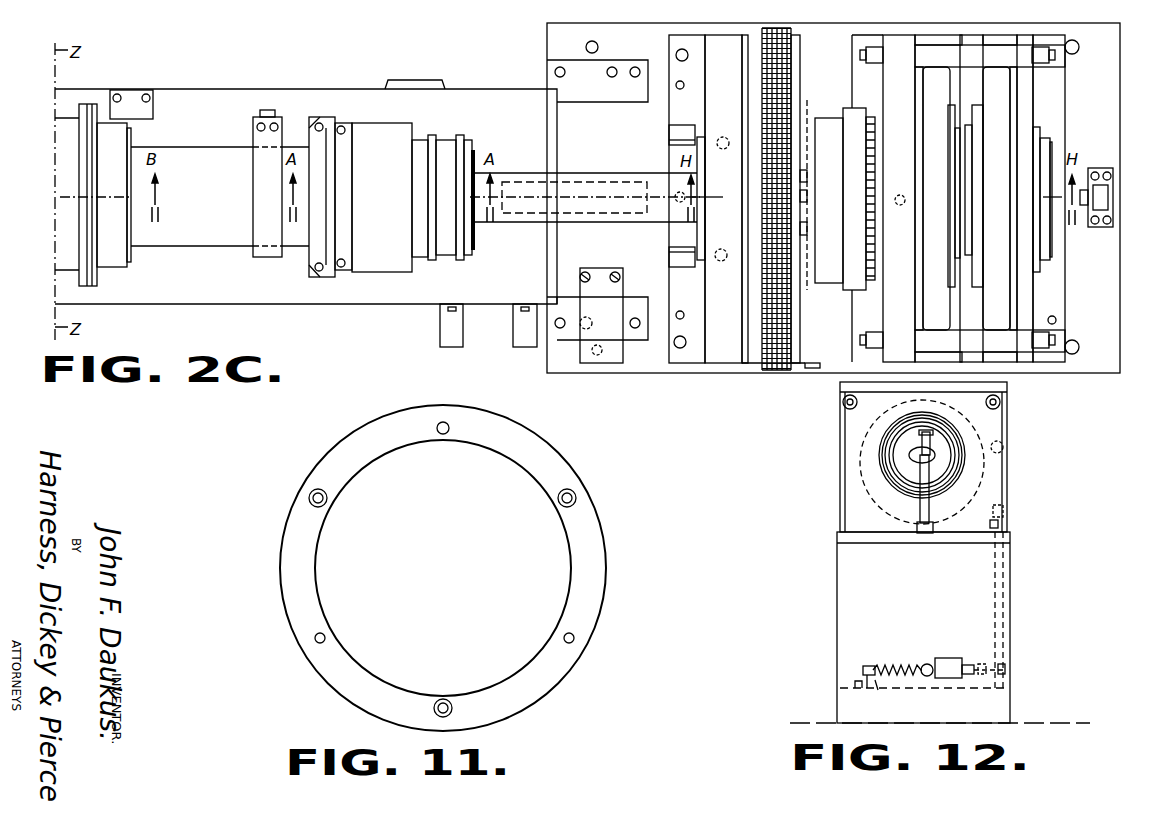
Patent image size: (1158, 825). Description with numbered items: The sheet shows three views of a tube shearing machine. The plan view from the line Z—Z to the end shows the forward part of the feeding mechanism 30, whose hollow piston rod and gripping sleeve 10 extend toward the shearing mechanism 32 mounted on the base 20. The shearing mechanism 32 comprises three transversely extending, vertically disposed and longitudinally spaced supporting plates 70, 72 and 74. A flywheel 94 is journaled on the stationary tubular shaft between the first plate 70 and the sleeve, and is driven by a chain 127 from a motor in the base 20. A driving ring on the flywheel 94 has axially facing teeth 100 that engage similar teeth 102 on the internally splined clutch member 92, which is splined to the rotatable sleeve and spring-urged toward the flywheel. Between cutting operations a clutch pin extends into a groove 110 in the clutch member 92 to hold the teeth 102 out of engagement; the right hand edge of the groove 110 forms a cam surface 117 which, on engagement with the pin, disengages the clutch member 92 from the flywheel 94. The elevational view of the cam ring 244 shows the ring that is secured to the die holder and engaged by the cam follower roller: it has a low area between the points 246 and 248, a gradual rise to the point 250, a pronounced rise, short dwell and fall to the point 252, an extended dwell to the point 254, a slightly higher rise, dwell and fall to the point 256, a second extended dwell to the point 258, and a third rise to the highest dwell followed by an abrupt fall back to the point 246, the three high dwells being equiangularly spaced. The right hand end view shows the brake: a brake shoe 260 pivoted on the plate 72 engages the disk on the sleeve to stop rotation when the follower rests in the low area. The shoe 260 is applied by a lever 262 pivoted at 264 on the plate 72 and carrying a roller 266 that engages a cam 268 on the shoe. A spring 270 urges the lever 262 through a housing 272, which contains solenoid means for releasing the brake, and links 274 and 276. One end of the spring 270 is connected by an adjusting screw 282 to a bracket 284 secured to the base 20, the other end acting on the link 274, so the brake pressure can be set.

In FIG. 2C, the motor shaft assembly 10 is at (190, 238).
In FIG. 2C, the base 20 is at (1105, 358).
In FIG. 12, the base 20 is at (1012, 575).
In FIG. 2C, the feeding mechanism 30 is at (80, 293).
In FIG. 2C, the shearing mechanism 32 is at (777, 372).
In FIG. 2C, the supporting plate 70 is at (720, 357).
In FIG. 2C, the supporting plate 72 is at (893, 315).
In FIG. 2C, the supporting plate 74 is at (1048, 358).
In FIG. 2C, the clutch member 92 is at (852, 175).
In FIG. 2C, the flywheel 94 is at (755, 365).
In FIG. 2C, the teeth 100 is at (800, 218).
In FIG. 2C, the teeth 102 is at (870, 196).
In FIG. 2C, the groove 110 is at (822, 113).
In FIG. 2C, the cam surface 117 is at (882, 198).
In FIG. 2C, the chain 127 is at (782, 366).
In FIG. 11, the cam ring 244 is at (355, 665).
In FIG. 11, the point 246 is at (600, 620).
In FIG. 11, the point 248 is at (605, 535).
In FIG. 11, the point 250 is at (500, 418).
In FIG. 11, the point 252 is at (385, 418).
In FIG. 11, the point 254 is at (282, 598).
In FIG. 11, the point 256 is at (335, 685).
In FIG. 11, the point 258 is at (560, 685).
In FIG. 12, the brake shoe 260 is at (1008, 473).
In FIG. 12, the lever 262 is at (1010, 517).
In FIG. 12, the pivot 264 is at (1008, 530).
In FIG. 12, the roller 266 is at (985, 505).
In FIG. 12, the cam 268 is at (1008, 497).
In FIG. 12, the spring 270 is at (900, 665).
In FIG. 12, the housing 272 is at (950, 658).
In FIG. 12, the link 274 is at (980, 664).
In FIG. 12, the link 276 is at (995, 592).
In FIG. 12, the screw 282 is at (872, 664).
In FIG. 12, the bracket 284 is at (873, 693).